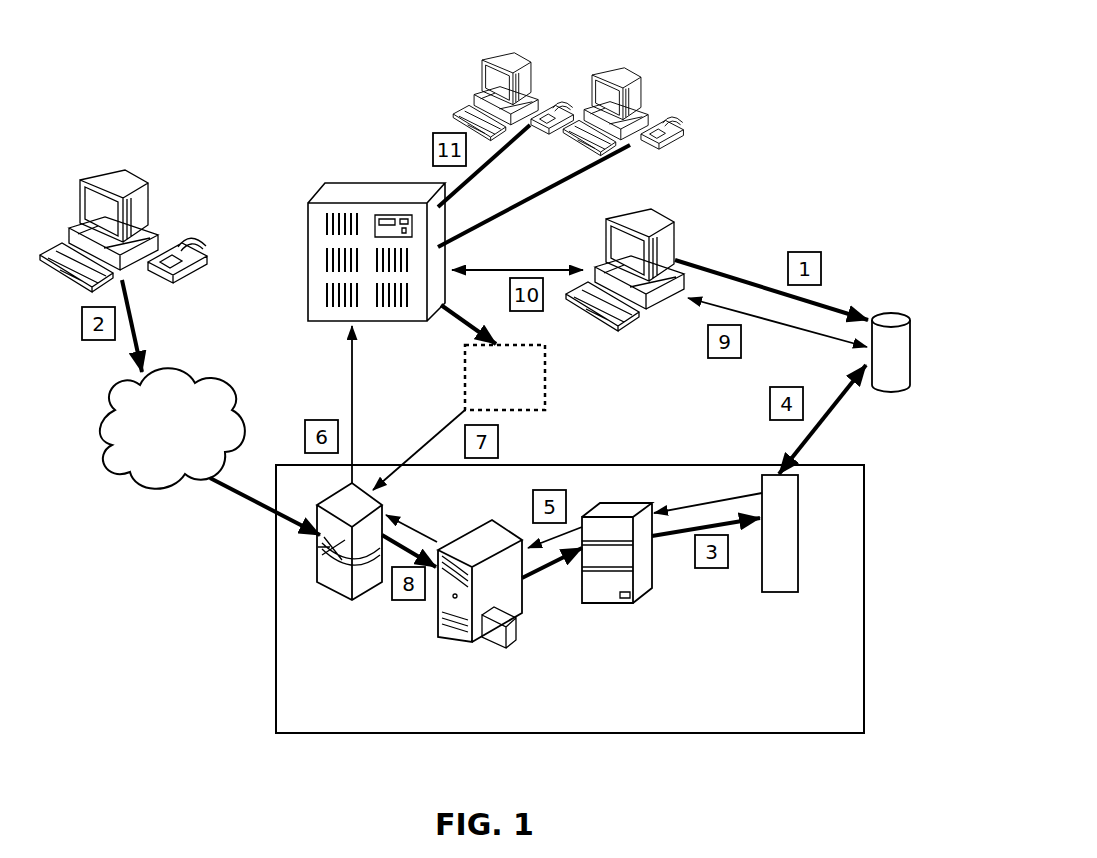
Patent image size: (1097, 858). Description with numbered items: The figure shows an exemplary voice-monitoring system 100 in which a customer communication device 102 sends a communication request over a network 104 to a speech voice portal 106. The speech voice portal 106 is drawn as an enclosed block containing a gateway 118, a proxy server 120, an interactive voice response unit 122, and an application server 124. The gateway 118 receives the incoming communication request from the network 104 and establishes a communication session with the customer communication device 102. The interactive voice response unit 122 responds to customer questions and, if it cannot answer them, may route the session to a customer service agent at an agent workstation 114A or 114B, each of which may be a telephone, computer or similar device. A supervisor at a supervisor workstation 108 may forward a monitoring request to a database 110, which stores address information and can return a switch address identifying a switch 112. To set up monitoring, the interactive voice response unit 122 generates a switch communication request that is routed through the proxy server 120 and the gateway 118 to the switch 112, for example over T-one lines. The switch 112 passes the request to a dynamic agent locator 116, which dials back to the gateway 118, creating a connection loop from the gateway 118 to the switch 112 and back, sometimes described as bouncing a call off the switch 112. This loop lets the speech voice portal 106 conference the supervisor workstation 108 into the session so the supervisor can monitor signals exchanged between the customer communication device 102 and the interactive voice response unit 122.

The system 100 is at (204, 82).
The customer communication device 102 is at (141, 178).
The network 104 is at (172, 428).
The speech voice portal 106 is at (276, 668).
The supervisor workstation 108 is at (670, 220).
The database 110 is at (909, 380).
The switch 112 is at (350, 183).
The agent workstation 114A is at (515, 53).
The agent workstation 114B is at (627, 72).
The dynamic agent locator 116 is at (505, 377).
The gateway 118 is at (336, 569).
The proxy server 120 is at (480, 622).
The interactive voice response unit 122 is at (617, 579).
The application server 124 is at (780, 574).